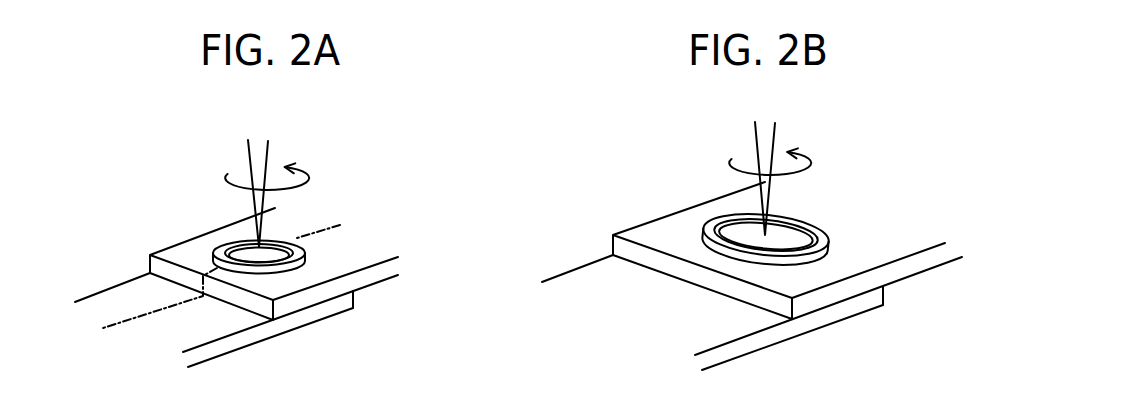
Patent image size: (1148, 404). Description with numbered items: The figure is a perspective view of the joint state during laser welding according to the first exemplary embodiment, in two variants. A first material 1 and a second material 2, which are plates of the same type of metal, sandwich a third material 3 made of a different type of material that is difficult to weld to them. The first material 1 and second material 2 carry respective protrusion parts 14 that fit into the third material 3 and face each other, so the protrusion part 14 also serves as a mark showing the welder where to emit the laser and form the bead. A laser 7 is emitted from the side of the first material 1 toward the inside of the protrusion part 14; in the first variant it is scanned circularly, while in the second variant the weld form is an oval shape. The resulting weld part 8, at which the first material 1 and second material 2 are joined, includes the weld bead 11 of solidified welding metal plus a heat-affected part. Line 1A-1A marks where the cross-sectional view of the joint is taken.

In FIG. 2A, the first material 1 is at (303, 222).
In FIG. 2B, the first material 1 is at (811, 212).
In FIG. 2A, the protrusion part 14 is at (268, 238).
In FIG. 2B, the protrusion part 14 is at (790, 218).
In FIG. 2A, the weld part 8 is at (212, 250).
In FIG. 2B, the weld part 8 is at (702, 233).
In FIG. 2A, the weld bead 11 is at (228, 252).
In FIG. 2B, the weld bead 11 is at (720, 227).
In FIG. 2A, the laser 7 is at (268, 152).
In FIG. 2B, the laser 7 is at (776, 135).
In FIG. 2A, the second material 2 is at (330, 317).
In FIG. 2B, the second material 2 is at (832, 323).
In FIG. 2A, the third material 3 is at (394, 277).
In FIG. 2B, the third material 3 is at (903, 280).
In FIG. 2A, the line 1A- 1A is at (340, 225).